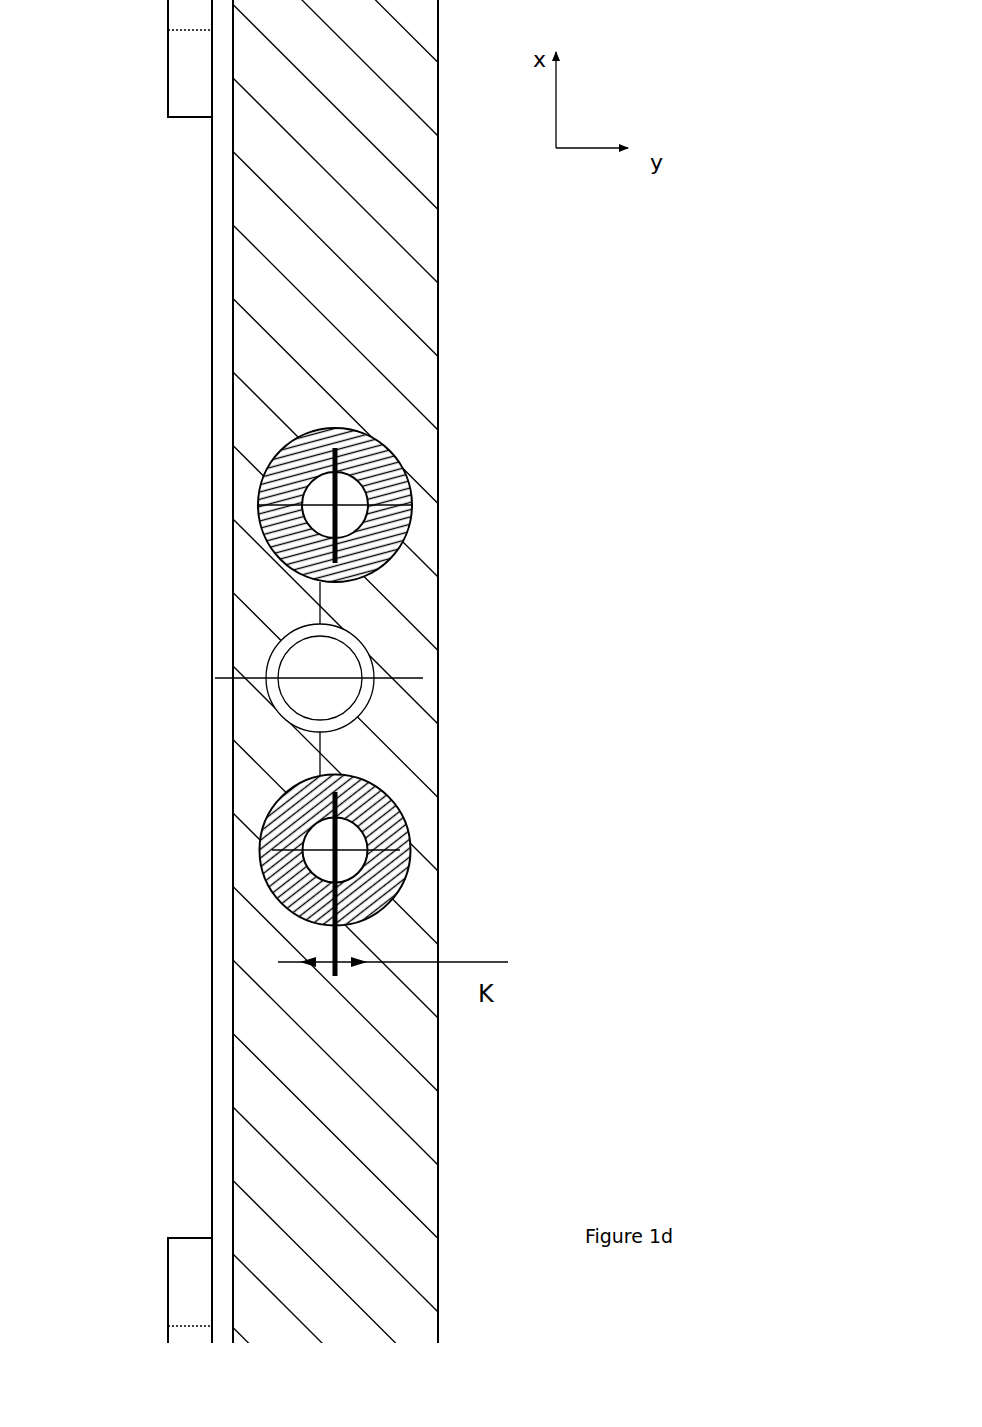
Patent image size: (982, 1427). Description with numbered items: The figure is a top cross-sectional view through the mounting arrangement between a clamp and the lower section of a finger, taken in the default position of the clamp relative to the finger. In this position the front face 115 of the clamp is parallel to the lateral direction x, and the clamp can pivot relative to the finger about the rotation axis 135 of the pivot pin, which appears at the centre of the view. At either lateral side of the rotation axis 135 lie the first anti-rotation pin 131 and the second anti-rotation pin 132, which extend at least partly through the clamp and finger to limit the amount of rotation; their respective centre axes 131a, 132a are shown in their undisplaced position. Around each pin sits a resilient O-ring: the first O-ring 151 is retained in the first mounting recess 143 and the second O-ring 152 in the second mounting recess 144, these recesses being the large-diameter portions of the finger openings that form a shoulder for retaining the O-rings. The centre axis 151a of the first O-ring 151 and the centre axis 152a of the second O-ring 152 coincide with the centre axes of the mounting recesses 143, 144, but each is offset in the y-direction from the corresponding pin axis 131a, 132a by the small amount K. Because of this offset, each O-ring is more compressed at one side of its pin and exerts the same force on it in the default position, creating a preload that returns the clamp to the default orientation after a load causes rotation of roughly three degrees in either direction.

The front face 115 is at (208, 296).
The first anti-rotation pin 131 is at (400, 862).
The centre axis of the first anti-rotation pin 131a is at (300, 851).
The second anti-rotation pin 132 is at (400, 515).
The centre axis of the second anti-rotation pin 132a is at (262, 500).
The rotation axis 135 is at (300, 675).
The first mounting recess 143 is at (415, 838).
The second mounting recess 144 is at (416, 503).
The first O-ring 151 is at (300, 880).
The centre axis of the first O-ring 151a is at (400, 822).
The second O-ring 152 is at (265, 522).
The centre axis of the second O-ring 152a is at (400, 478).